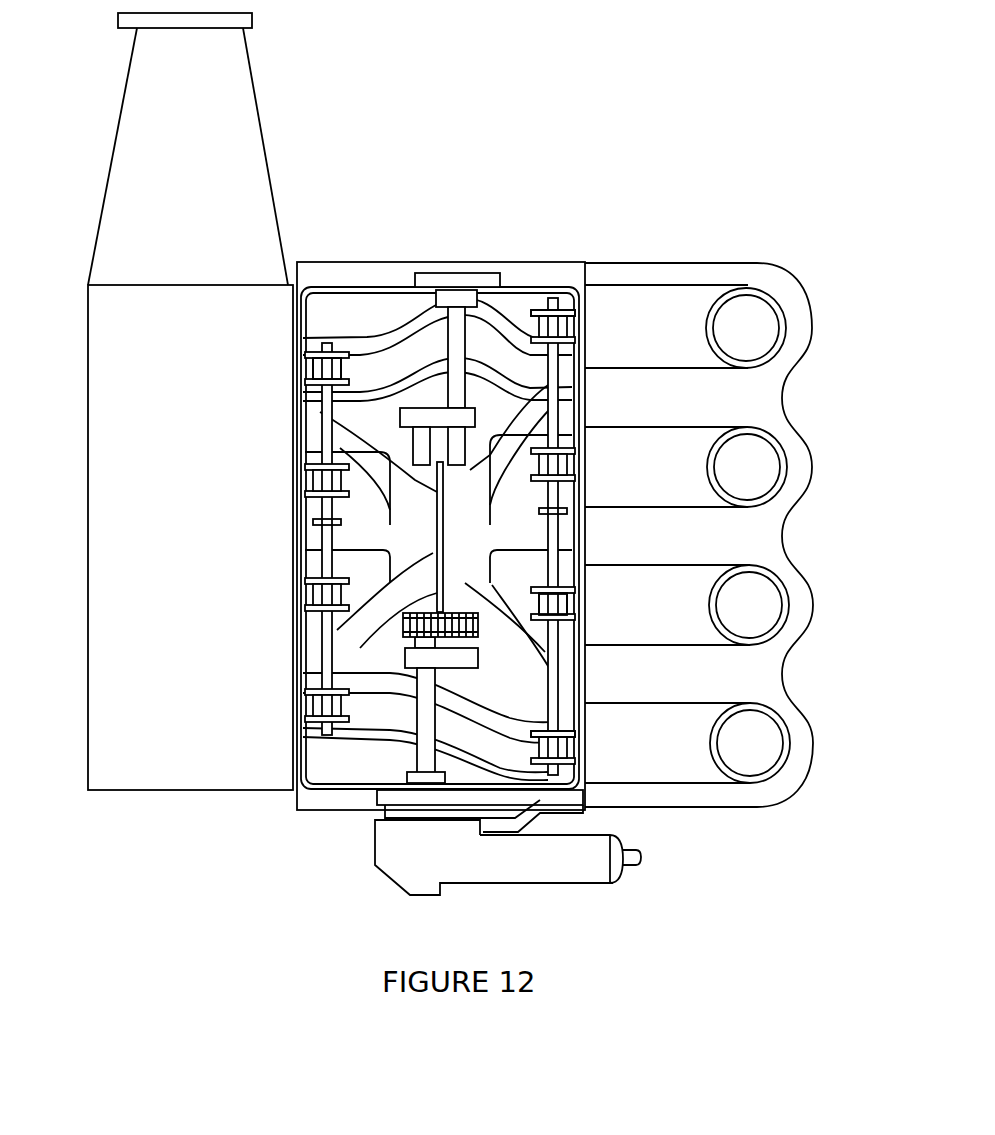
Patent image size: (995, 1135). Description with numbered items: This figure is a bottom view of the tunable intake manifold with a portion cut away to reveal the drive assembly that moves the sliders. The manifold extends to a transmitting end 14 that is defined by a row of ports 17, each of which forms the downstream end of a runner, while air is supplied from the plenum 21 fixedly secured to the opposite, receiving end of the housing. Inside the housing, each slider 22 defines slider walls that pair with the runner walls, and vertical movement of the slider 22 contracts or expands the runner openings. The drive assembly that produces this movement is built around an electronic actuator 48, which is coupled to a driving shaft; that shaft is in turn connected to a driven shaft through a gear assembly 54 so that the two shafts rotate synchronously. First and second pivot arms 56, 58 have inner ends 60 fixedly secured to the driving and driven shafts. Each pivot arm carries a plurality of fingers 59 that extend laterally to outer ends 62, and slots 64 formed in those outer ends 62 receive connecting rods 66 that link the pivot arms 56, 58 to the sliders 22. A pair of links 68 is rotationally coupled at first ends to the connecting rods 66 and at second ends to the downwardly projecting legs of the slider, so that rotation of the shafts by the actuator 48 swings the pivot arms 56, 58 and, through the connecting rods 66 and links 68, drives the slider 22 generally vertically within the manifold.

The transmitting end 14 is at (780, 768).
The ports 17 is at (765, 325).
The plenum 21 is at (90, 625).
The slider 22 is at (396, 340).
The electronic actuator 48 is at (532, 885).
The gear assembly 54 is at (480, 648).
The first pivot arm 56 is at (570, 677).
The second pivot arm 58 is at (340, 665).
The fingers 59 is at (320, 417).
The inner ends 60 is at (420, 485).
The outer ends 62 is at (322, 443).
The slots 64 is at (570, 412).
The connecting rods 66 is at (322, 530).
The links 68 is at (560, 297).